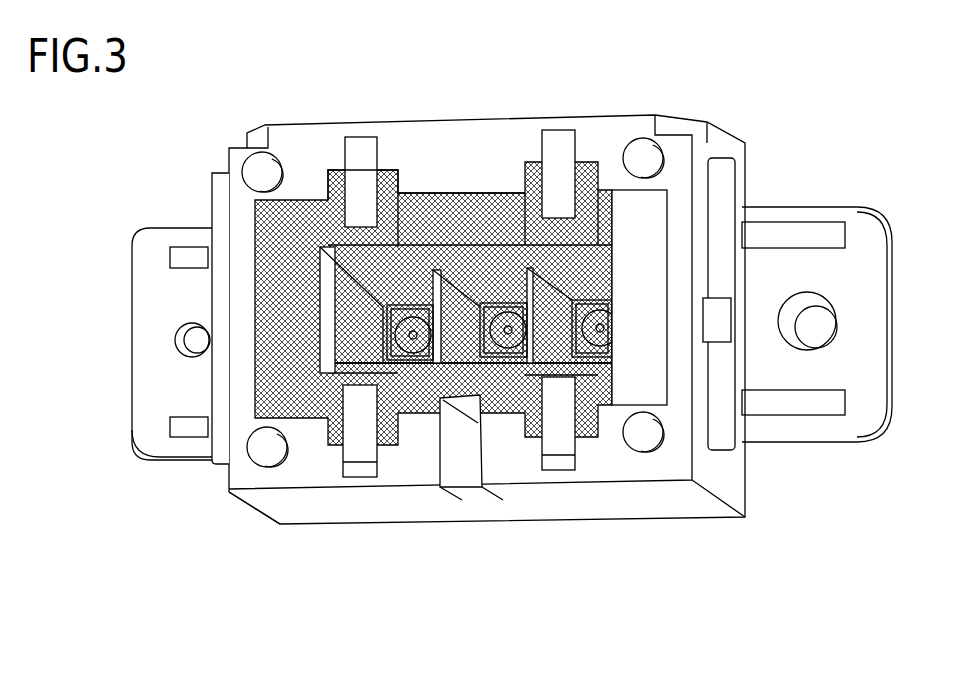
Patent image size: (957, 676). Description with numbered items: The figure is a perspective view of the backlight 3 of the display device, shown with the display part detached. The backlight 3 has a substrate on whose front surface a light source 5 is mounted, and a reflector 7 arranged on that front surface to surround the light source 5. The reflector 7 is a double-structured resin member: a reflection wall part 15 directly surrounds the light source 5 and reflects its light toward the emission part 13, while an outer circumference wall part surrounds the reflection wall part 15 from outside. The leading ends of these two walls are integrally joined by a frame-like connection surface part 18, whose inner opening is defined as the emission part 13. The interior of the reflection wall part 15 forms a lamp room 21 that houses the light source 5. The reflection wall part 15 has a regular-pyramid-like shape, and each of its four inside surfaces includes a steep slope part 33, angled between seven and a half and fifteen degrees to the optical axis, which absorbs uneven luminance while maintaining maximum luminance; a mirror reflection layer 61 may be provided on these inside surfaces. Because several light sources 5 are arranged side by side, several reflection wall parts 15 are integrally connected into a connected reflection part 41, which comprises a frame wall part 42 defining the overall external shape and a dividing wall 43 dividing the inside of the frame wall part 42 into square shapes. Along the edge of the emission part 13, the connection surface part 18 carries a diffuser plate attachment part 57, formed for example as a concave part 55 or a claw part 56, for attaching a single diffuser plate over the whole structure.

The backlight 3 is at (712, 68).
The light source 5 is at (527, 328).
The reflector 7 is at (610, 112).
The emission part 13 is at (424, 368).
The reflection wall part 15 is at (316, 283).
The connection surface part 18 is at (317, 468).
The lamp room 21 is at (522, 270).
The steep slope part 33 is at (355, 306).
The connected reflection part 41 is at (486, 247).
The frame wall part 42 is at (405, 300).
The dividing wall 43 is at (450, 305).
The concave part 55 is at (310, 222).
The claw part 56 is at (348, 162).
The diffuser plate attachment part 57 is at (335, 251).
The mirror reflection layer 61 is at (143, 506).